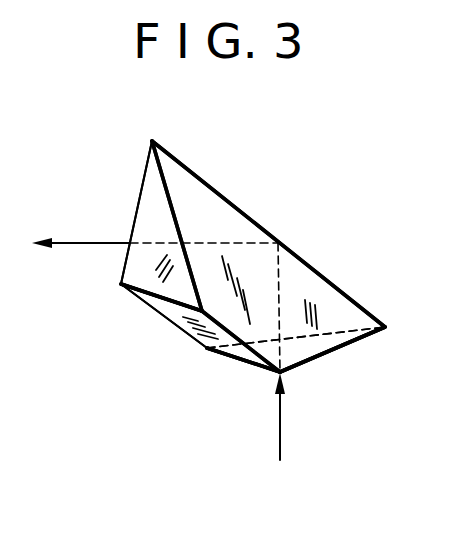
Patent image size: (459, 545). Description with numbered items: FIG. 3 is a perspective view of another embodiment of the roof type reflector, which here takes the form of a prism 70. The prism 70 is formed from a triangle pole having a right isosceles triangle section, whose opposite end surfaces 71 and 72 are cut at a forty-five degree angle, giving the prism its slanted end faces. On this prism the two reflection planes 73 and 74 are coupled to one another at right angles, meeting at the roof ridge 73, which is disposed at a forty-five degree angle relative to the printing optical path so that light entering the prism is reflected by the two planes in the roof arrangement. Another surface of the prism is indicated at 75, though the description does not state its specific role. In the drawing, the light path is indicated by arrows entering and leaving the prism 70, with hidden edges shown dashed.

The prism 70 is at (255, 211).
The end surface 71 is at (315, 348).
The end surface 72 is at (148, 217).
The reflection plane 73 is at (247, 232).
The reflection plane 74 is at (143, 277).
The exit surface of prism 75 is at (330, 281).